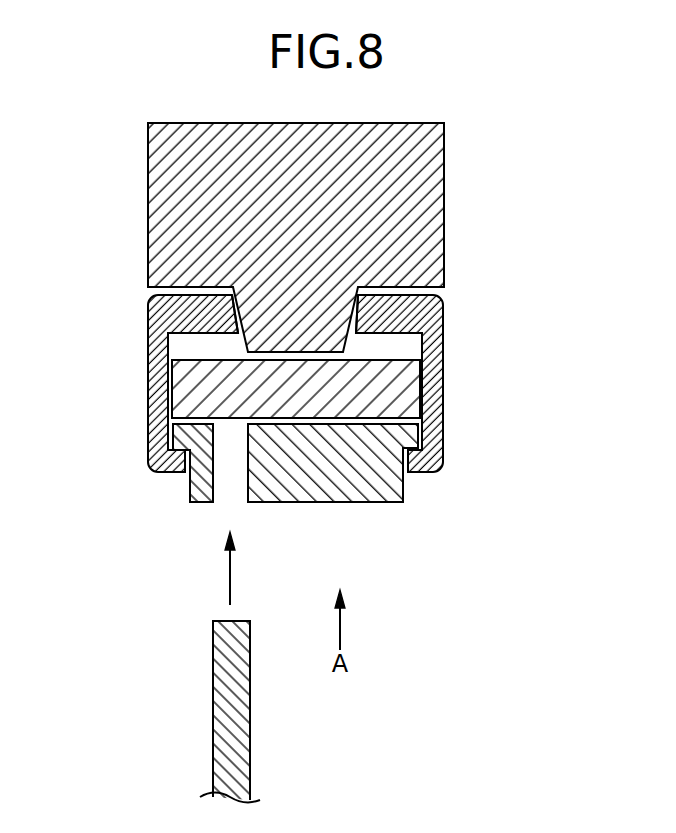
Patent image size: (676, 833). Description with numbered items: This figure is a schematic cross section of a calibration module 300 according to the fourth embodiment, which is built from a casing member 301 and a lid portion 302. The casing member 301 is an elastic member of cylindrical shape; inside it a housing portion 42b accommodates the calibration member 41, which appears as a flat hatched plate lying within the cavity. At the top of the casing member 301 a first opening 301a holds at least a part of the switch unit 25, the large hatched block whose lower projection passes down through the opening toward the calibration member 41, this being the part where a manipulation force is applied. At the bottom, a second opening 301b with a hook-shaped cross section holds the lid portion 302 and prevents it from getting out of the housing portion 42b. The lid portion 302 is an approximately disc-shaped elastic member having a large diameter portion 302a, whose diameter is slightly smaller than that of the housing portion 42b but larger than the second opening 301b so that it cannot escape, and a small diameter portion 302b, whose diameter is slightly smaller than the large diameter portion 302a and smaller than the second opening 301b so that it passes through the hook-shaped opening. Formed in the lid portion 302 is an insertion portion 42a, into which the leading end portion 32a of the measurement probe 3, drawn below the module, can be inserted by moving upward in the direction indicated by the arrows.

The switch unit 25 is at (420, 195).
The calibration module 300 is at (299, 436).
The casing member 301 is at (440, 411).
The first opening 301a is at (360, 294).
The second opening 301b is at (397, 466).
The calibration member 41 is at (412, 373).
The insertion portion 42a is at (232, 497).
The housing portion 42b is at (413, 340).
The lid portion 302 is at (233, 501).
The large diameter portion 302a is at (178, 435).
The small diameter portion 302b is at (195, 488).
The measurement probe 3 is at (291, 711).
The leading end portion 32a is at (250, 729).